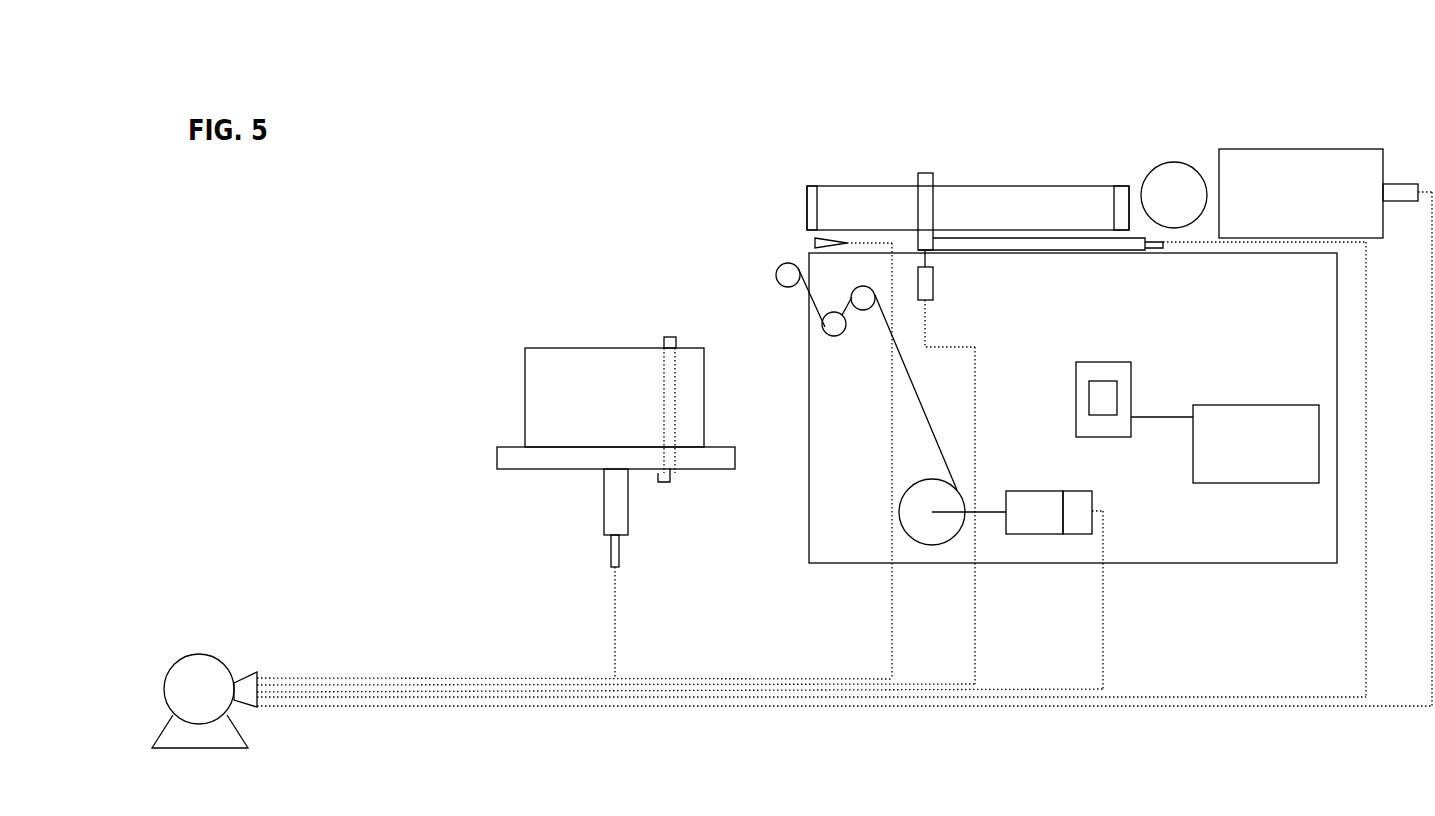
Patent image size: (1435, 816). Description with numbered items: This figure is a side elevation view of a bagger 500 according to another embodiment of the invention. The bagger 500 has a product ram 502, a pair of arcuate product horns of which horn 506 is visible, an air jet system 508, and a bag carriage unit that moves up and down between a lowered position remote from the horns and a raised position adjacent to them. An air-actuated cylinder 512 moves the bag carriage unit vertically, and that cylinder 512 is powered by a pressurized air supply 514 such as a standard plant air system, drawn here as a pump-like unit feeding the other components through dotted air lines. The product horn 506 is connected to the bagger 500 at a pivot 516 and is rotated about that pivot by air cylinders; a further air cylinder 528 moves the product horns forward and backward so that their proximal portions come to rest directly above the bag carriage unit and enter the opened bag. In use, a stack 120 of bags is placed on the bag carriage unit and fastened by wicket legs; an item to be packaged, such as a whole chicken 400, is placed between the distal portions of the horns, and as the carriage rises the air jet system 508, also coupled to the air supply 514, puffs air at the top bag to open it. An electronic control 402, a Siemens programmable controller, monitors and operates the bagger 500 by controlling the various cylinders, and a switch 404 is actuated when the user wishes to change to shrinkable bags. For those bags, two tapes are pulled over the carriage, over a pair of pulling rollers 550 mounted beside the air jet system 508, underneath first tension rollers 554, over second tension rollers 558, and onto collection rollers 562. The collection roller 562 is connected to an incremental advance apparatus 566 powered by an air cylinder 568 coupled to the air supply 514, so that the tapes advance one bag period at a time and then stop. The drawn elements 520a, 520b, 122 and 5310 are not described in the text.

The bagger 500 is at (945, 68).
The product ram 502 is at (1367, 158).
The product horn 506 is at (1083, 193).
The air jet system 508 is at (813, 243).
The air-actuated cylinder 512 is at (618, 505).
The pressurized air supply 514 is at (185, 675).
The pivot 516 is at (927, 177).
The first end cap 520a is at (815, 193).
The second end cap 520b is at (1121, 192).
The air cylinder 528 is at (1107, 242).
The pulling roller 550 is at (790, 272).
The first tension roller 554 is at (830, 330).
The second tension roller 558 is at (865, 305).
The collection roller 562 is at (925, 493).
The incremental advance apparatus 566 is at (1052, 497).
The air cylinder 568 is at (1083, 498).
The whole chicken 400 is at (1182, 173).
The electronic control 402 is at (1256, 444).
The switch 404 is at (1103, 367).
The stack of bags 120 is at (577, 363).
The port 122 is at (668, 337).
The base plate 5310 is at (507, 457).